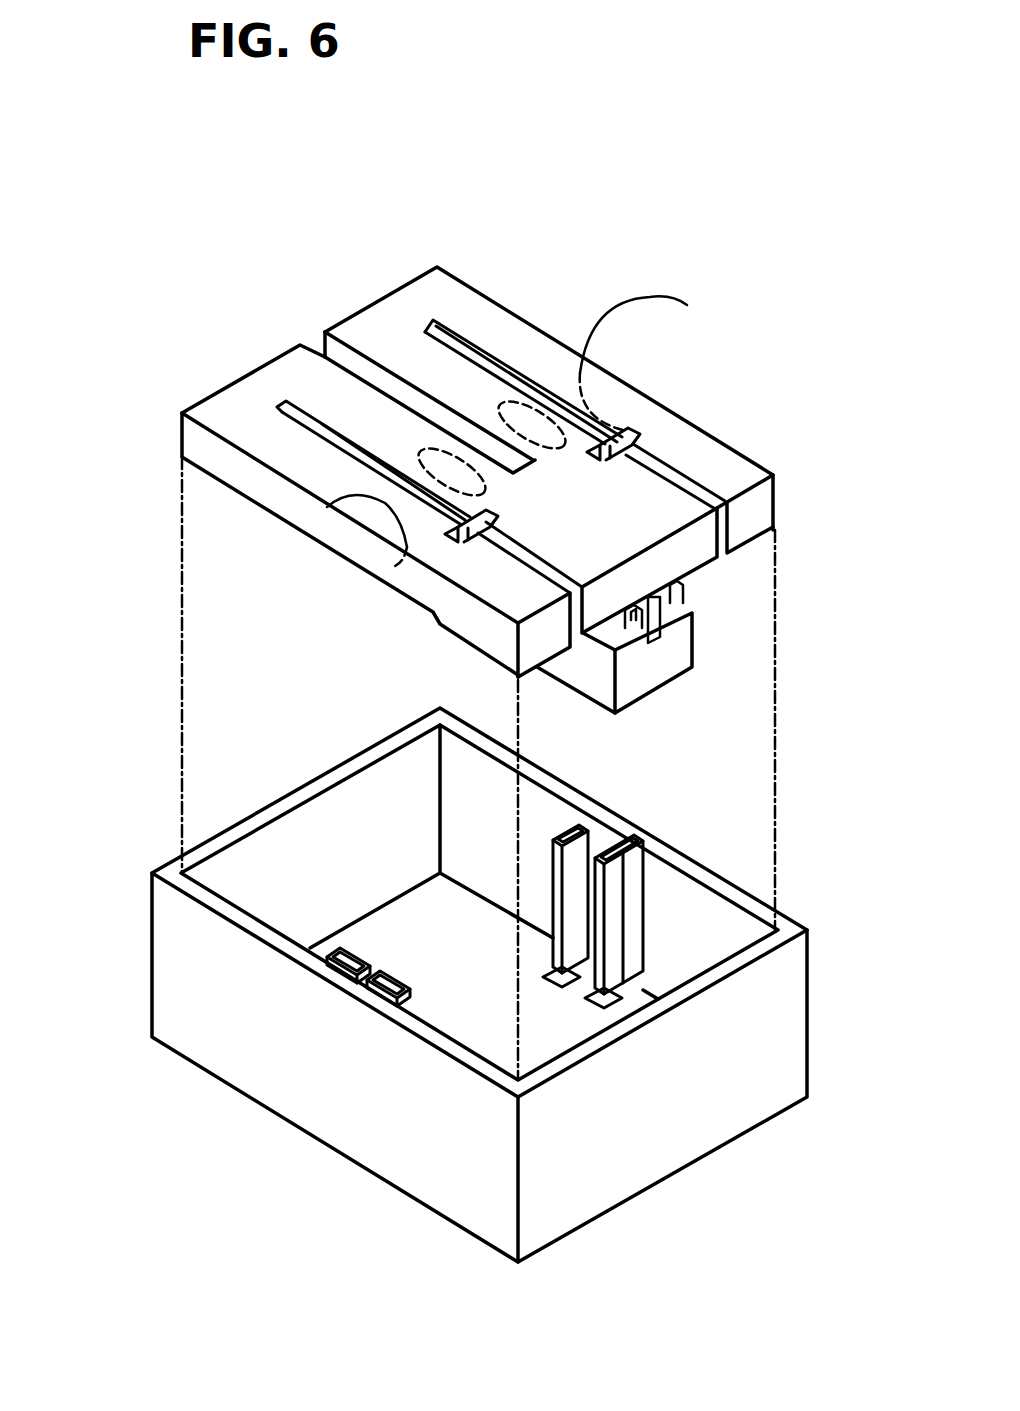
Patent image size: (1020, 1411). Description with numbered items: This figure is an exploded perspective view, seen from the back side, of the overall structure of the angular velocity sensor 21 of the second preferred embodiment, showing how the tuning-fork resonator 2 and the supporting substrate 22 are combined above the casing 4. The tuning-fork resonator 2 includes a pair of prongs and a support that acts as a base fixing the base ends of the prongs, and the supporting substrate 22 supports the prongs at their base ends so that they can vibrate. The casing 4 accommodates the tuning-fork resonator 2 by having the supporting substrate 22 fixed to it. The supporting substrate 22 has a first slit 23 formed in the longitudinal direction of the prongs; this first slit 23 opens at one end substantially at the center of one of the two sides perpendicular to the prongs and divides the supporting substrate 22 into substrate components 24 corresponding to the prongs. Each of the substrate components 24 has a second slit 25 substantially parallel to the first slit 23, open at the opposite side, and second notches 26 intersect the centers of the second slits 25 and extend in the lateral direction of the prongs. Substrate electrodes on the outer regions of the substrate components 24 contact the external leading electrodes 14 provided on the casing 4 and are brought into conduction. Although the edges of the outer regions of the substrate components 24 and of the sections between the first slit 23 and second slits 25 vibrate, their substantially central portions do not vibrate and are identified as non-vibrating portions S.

The angular velocity sensor 21 is at (157, 571).
The supporting substrate 22 is at (460, 278).
The first slit 23 is at (316, 341).
The substrate components 24 is at (401, 308).
The second slits 25 is at (468, 348).
The second notches 26 is at (628, 419).
The non-vibrating portions S is at (617, 388).
The tuning-fork resonator 2 is at (697, 651).
The casing 4 is at (347, 762).
The external leading electrodes 14 is at (389, 982).